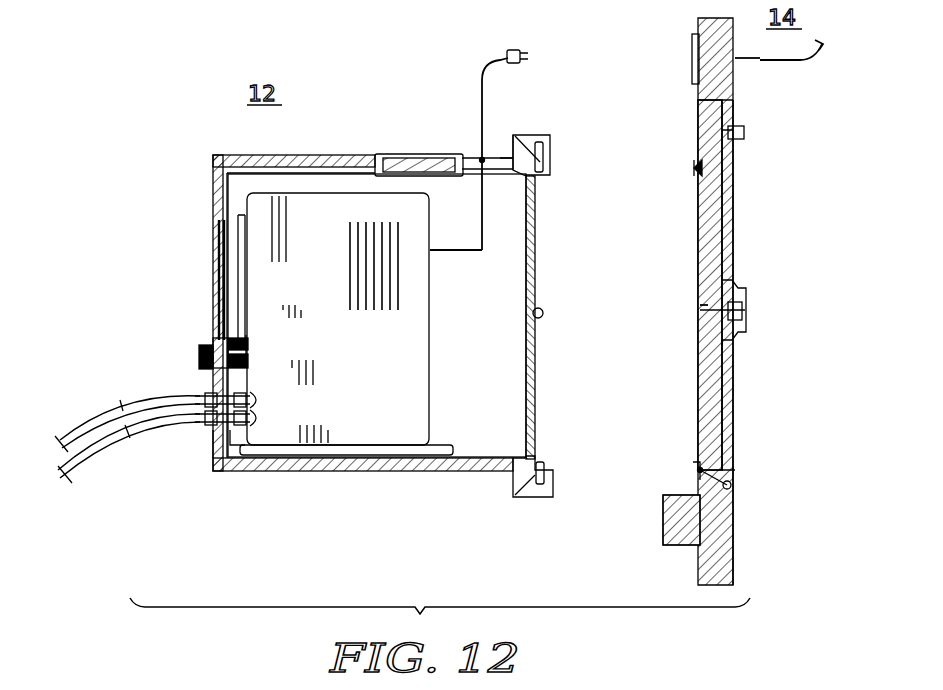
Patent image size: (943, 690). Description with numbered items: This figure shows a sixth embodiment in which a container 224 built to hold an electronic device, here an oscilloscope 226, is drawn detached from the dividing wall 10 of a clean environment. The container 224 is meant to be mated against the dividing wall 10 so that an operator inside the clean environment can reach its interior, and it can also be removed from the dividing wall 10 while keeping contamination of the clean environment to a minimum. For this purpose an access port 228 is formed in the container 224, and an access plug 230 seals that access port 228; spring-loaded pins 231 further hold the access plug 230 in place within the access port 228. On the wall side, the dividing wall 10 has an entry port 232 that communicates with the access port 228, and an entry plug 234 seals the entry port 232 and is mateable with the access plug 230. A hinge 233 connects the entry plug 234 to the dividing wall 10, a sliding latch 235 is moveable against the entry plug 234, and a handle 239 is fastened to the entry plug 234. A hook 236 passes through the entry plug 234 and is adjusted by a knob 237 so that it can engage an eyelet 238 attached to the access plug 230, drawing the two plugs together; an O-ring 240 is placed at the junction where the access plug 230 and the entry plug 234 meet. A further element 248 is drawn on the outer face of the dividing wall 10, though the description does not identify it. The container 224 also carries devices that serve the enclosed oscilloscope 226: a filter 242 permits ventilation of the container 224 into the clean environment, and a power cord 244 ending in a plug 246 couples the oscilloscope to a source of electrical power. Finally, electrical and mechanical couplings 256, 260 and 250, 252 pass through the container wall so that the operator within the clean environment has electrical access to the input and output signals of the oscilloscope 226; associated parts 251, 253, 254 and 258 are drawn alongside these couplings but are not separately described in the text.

The dividing wall 10 is at (737, 80).
The container 224 is at (150, 250).
The oscilloscope 226 is at (405, 411).
The access port 228 is at (558, 375).
The access plug 230 is at (536, 250).
The spring-loaded pins 231 is at (537, 180).
The entry port 232 is at (750, 217).
The hinge 233 is at (732, 485).
The entry plug 234 is at (698, 207).
The sliding latch 235 is at (745, 132).
The hook 236 is at (698, 300).
The knob 237 is at (748, 310).
The eyelet 238 is at (544, 316).
The handle 239 is at (740, 340).
The O-ring 240 is at (694, 166).
The filter 242 is at (395, 158).
The power cord 244 is at (478, 82).
The plug 246 is at (513, 64).
The cover plate 248 is at (690, 70).
The electrical and mechanical coupling 250 is at (199, 350).
The inlet tube 251 is at (218, 272).
The electrical and mechanical coupling 252 is at (215, 345).
The inlet port 253 is at (246, 338).
The outlet port 254 is at (248, 356).
The electrical and mechanical coupling 256 is at (200, 425).
The connector 258 is at (260, 409).
The electrical and mechanical coupling 260 is at (128, 402).